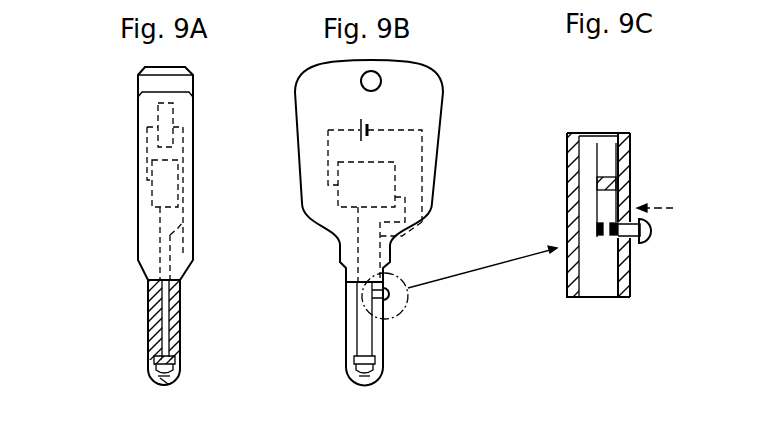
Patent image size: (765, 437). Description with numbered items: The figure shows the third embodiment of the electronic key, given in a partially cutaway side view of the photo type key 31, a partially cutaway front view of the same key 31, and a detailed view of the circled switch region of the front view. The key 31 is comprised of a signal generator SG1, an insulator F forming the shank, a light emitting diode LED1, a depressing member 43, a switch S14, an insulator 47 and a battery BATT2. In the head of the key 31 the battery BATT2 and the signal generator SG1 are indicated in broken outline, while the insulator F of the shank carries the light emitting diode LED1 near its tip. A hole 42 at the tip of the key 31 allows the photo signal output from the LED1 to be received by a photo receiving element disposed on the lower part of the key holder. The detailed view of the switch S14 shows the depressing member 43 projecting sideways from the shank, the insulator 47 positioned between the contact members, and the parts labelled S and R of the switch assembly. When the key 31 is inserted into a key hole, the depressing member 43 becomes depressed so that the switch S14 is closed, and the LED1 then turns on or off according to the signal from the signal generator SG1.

In FIG. 9A, the photo type key 31 is at (137, 247).
In FIG. 9B, the photo type key 31 is at (302, 203).
In FIG. 9A, the battery BATT2 is at (165, 118).
In FIG. 9B, the battery BATT2 is at (372, 127).
In FIG. 9A, the signal generator SG1 is at (160, 186).
In FIG. 9B, the signal generator SG1 is at (380, 183).
In FIG. 9A, the insulator F is at (153, 323).
In FIG. 9B, the insulator F is at (350, 303).
In FIG. 9A, the light emitting diode LED1 is at (178, 362).
In FIG. 9B, the light emitting diode LED1 is at (383, 362).
In FIG. 9A, the hole 42 is at (163, 385).
In FIG. 9B, the hole 42 is at (365, 385).
In FIG. 9B, the switch S14 is at (390, 296).
In FIG. 9C, the switch S14 is at (673, 118).
In FIG. 9C, the switch spring contact S is at (603, 140).
In FIG. 9C, the key groove wall R is at (618, 150).
In FIG. 9C, the insulator 47 is at (617, 188).
In FIG. 9C, the depressing member 43 is at (648, 240).